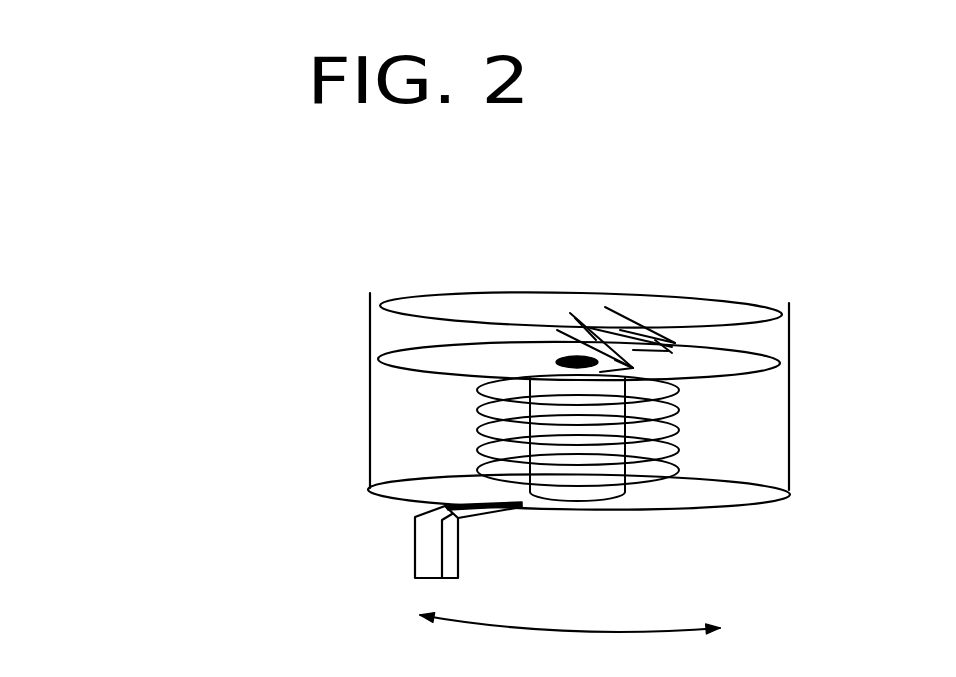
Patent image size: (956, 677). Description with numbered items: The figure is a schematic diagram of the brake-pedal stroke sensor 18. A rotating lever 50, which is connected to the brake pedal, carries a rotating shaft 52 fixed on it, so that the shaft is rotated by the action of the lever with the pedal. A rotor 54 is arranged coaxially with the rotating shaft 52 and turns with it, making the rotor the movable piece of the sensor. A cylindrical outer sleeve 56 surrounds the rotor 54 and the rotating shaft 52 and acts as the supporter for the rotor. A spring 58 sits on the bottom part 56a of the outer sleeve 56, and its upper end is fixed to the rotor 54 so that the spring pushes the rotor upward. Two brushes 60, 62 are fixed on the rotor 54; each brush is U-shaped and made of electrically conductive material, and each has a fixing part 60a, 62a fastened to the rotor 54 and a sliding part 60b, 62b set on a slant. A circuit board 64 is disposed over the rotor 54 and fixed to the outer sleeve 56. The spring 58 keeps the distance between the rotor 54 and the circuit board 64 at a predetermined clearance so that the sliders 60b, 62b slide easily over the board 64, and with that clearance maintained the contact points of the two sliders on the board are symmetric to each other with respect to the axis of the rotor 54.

The brake stroke sensor 18 is at (396, 284).
The rotating lever 50 is at (415, 550).
The rotating shaft 52 is at (608, 490).
The rotor 54 is at (390, 365).
The outer sleeve 56 is at (790, 383).
The bottom part 56a is at (781, 493).
The spring 58 is at (660, 485).
The brush 60 is at (798, 248).
The fixing part 60a is at (702, 338).
The sliding part 60b is at (638, 331).
The brush 62 is at (633, 248).
The fixing part 62a is at (563, 357).
The sliding part 62b is at (589, 334).
The circuit board 64 is at (774, 310).